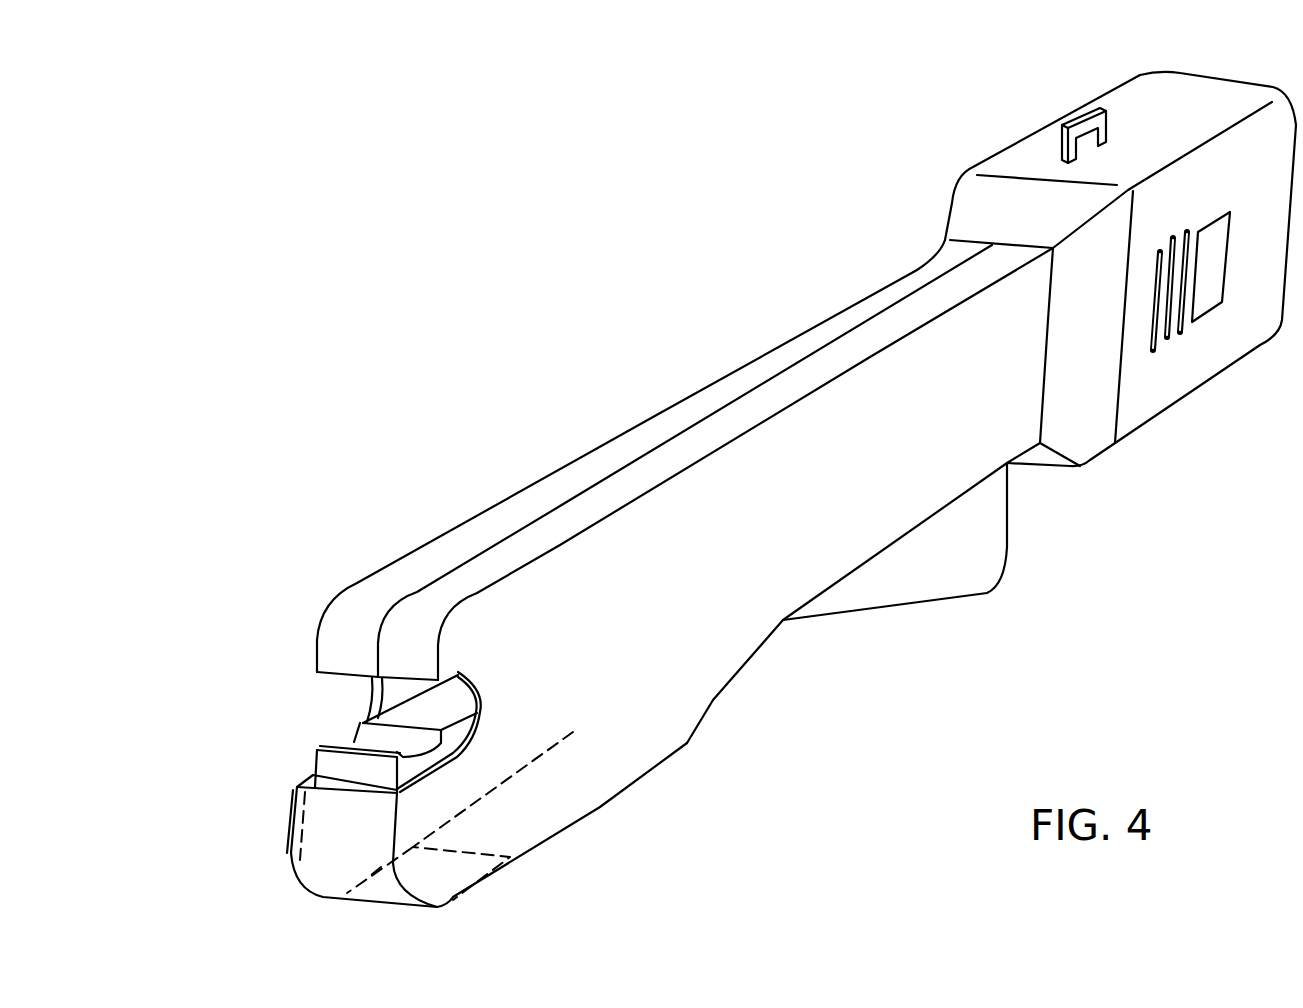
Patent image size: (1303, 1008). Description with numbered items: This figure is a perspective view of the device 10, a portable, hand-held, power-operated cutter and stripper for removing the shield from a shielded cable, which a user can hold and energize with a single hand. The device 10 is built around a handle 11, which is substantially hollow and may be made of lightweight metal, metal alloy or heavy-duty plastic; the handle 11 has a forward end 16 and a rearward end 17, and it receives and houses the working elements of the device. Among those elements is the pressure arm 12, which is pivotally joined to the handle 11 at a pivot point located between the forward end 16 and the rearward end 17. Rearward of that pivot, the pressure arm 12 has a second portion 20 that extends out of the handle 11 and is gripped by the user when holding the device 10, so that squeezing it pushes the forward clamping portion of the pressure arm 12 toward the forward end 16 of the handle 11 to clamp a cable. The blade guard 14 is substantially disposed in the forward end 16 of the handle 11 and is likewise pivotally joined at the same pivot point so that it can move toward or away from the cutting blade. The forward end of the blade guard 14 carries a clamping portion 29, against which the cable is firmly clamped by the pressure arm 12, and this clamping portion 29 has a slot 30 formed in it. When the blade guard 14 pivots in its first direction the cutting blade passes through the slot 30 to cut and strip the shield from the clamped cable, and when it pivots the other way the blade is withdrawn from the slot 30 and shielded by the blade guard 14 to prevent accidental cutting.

The device 10 is at (625, 345).
The handle 11 is at (765, 632).
The pressure arm 12 is at (870, 615).
The blade guard 14 is at (413, 705).
The forward end 16 is at (640, 748).
The rearward end 17 is at (990, 432).
The second portion 20 is at (985, 547).
The clamping portion 29 is at (347, 735).
The slot 30 is at (405, 758).